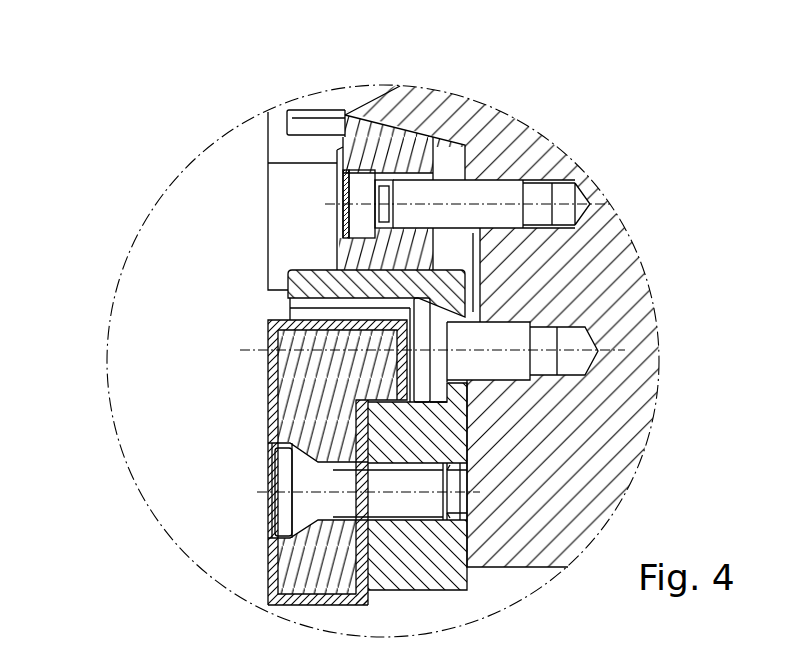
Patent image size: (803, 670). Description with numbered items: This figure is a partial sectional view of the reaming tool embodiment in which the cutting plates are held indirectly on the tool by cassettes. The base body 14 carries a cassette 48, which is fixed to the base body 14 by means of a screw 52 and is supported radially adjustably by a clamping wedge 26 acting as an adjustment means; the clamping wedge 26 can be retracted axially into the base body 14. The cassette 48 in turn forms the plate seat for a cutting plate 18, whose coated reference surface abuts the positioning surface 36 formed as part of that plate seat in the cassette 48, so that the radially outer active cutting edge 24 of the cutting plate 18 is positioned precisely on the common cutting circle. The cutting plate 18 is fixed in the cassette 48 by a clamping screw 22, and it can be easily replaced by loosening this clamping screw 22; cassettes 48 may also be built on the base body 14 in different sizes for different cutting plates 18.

The base body 14 is at (505, 120).
The cutting plate 18 is at (255, 412).
The clamping screw 22 is at (283, 517).
The cutting edge 24 is at (266, 606).
The clamping wedge 26 is at (387, 140).
The positioning surface 36 is at (383, 410).
The cassette 48 is at (405, 558).
The screw 52 is at (533, 367).